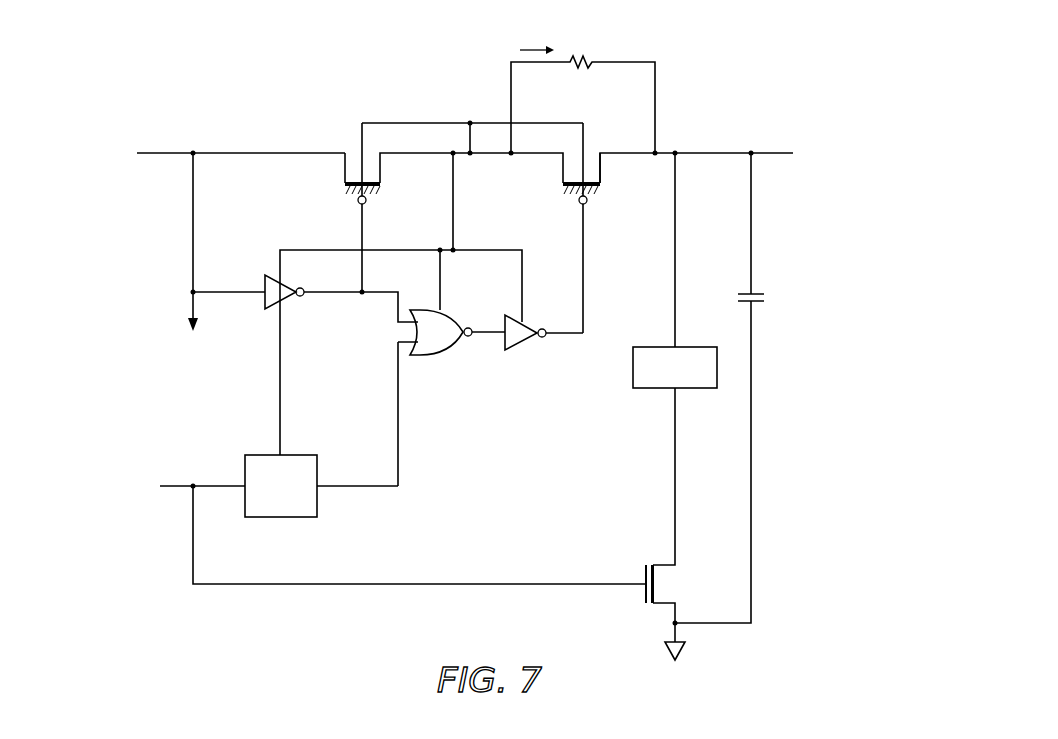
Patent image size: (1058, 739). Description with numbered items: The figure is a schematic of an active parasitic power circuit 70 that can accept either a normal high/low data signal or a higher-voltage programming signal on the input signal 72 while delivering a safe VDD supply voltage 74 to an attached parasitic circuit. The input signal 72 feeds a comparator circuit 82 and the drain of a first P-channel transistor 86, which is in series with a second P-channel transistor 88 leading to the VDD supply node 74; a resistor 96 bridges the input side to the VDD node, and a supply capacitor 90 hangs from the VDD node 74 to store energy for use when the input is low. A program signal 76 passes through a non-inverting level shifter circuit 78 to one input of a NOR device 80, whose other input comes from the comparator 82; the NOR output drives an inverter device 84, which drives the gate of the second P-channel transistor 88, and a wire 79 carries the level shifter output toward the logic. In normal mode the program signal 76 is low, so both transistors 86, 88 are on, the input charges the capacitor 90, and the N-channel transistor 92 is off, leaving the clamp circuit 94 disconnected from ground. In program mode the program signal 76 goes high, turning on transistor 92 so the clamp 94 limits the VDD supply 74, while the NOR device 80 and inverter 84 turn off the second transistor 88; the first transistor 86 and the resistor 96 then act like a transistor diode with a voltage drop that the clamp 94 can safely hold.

The active parasitic power circuit 70 is at (312, 76).
The input signal 72 is at (160, 151).
The VDD supply voltage 74 is at (773, 151).
The program signal 76 is at (178, 484).
The non-inverting level shifter circuit 78 is at (270, 518).
The feedback wire to MID node 79 is at (302, 249).
The NOR device 80 is at (443, 356).
The comparator circuit 82 is at (292, 297).
The inverter device 84 is at (524, 344).
The first P-channel transistor 86 is at (355, 197).
The second P-channel transistor 88 is at (571, 197).
The supply capacitor 90 is at (738, 296).
The N-channel transistor 92 is at (665, 605).
The clamp circuit 94 is at (665, 389).
The resistor 96 is at (597, 66).